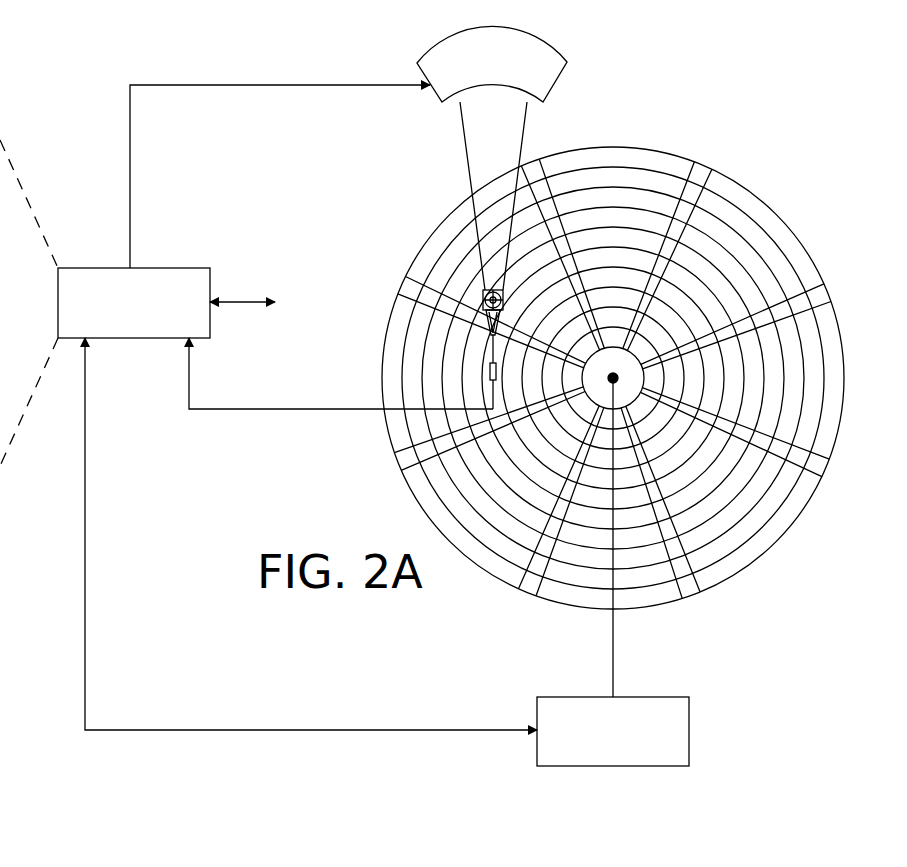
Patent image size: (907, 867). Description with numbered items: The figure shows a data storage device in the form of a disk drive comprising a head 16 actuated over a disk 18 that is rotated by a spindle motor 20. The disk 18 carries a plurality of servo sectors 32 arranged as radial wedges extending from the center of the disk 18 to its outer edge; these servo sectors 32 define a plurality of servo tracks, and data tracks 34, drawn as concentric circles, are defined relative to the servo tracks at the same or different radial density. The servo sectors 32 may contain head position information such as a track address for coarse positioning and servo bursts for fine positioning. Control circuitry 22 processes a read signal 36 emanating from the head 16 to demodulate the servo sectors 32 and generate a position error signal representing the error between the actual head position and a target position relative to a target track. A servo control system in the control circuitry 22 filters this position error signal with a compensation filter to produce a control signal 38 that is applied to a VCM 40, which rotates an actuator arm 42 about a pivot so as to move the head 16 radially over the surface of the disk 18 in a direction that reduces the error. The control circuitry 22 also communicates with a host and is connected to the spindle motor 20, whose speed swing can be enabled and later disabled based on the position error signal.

The head 16 is at (488, 381).
The disk 18 is at (612, 370).
The spindle motor 20 is at (689, 727).
The control circuitry 22 is at (135, 340).
The servo sectors 32 is at (612, 384).
The data tracks 34 is at (603, 172).
The read signal 36 is at (265, 410).
The control signal 38 is at (130, 168).
The VCM 40 is at (432, 96).
The actuator arm 42 is at (469, 172).